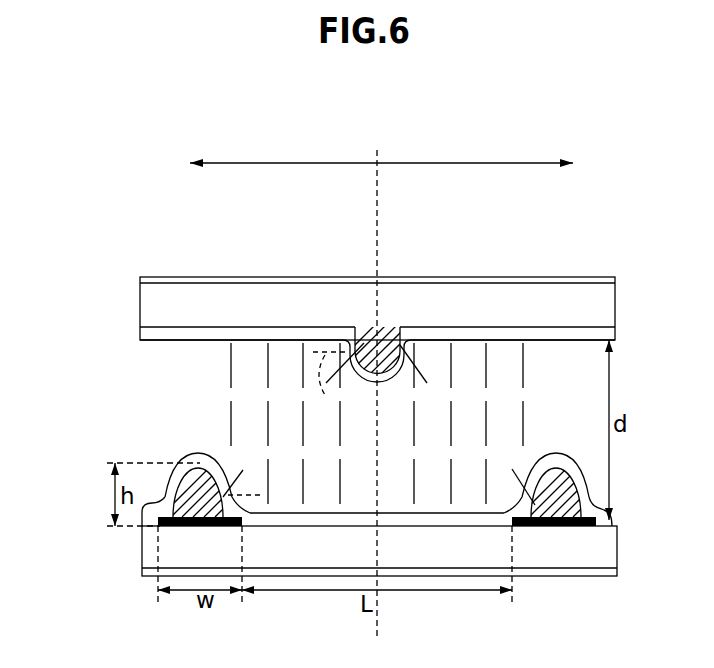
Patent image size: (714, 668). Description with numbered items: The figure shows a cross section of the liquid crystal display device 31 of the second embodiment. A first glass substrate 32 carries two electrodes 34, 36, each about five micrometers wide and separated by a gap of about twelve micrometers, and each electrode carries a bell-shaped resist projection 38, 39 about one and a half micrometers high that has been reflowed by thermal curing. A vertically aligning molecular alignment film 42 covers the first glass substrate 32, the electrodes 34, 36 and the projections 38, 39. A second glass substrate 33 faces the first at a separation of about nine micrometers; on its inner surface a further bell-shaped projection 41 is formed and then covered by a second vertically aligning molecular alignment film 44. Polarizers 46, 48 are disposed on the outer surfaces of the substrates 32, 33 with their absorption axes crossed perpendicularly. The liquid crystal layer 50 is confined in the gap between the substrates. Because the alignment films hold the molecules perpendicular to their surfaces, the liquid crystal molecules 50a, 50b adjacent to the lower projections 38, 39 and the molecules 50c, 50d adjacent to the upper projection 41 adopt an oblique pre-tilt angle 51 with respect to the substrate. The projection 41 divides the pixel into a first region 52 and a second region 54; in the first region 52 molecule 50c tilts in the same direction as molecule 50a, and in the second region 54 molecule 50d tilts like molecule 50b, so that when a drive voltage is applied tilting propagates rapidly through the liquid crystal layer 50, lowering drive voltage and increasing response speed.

The liquid crystal display device 31 is at (110, 205).
The first glass substrate 32 is at (548, 562).
The second glass substrate 33 is at (457, 297).
The electrode 34 is at (167, 505).
The electrode 36 is at (598, 510).
The projection 38 is at (197, 458).
The projection 39 is at (560, 468).
The projection 41 is at (365, 335).
The molecular alignment film 42 is at (333, 520).
The molecular alignment film 44 is at (243, 333).
The polarizer 46 is at (586, 576).
The polarizer 48 is at (525, 277).
The liquid crystal layer 50 is at (552, 367).
The liquid crystal molecule 50a is at (238, 478).
The liquid crystal molecule 50b is at (516, 480).
The liquid crystal molecule 50c is at (348, 350).
The liquid crystal molecule 50d is at (419, 360).
The pre-tilt angle 51 is at (329, 391).
The first region 52 is at (265, 164).
The second region 54 is at (498, 164).